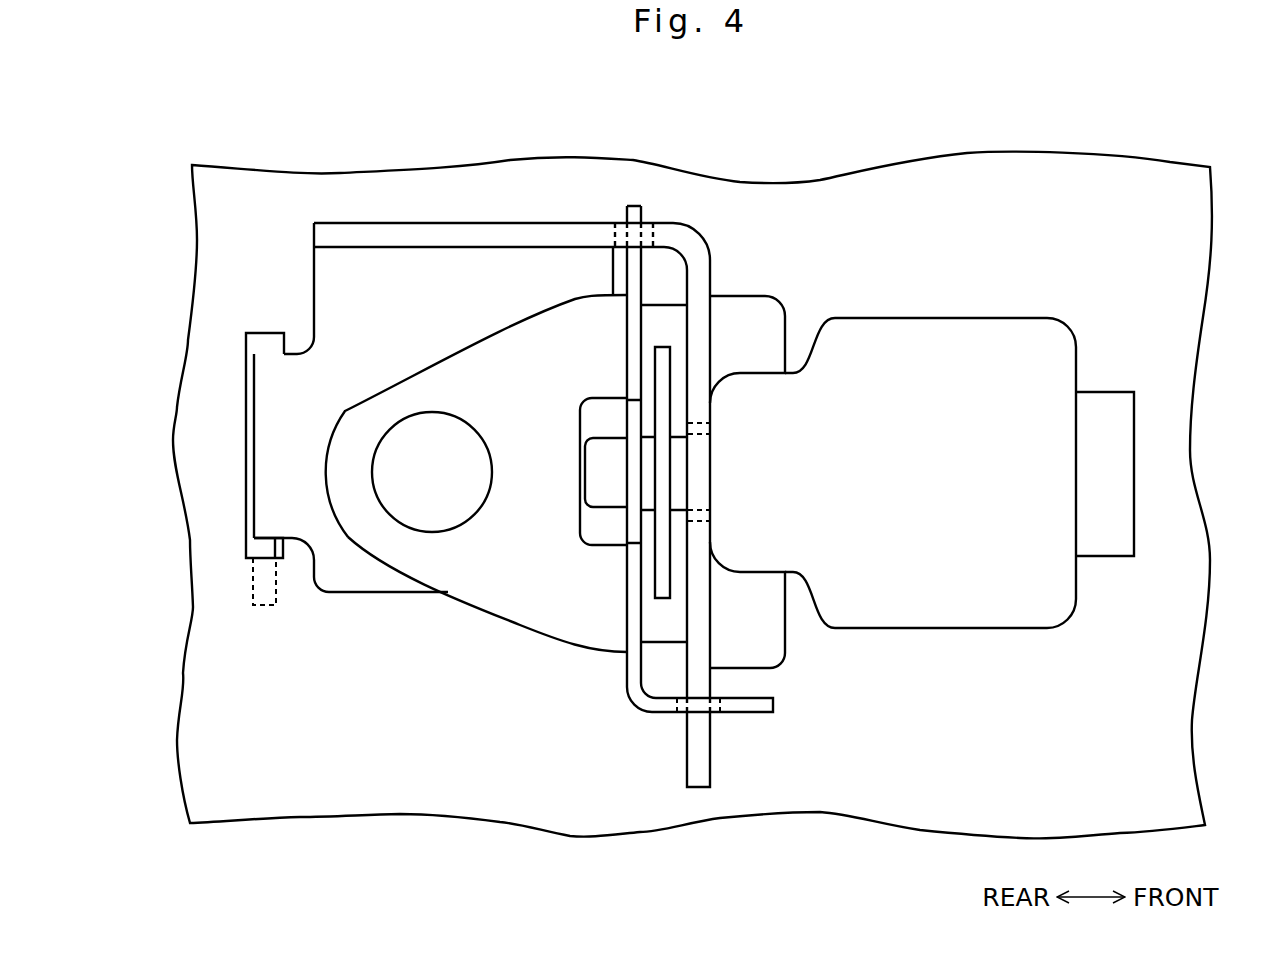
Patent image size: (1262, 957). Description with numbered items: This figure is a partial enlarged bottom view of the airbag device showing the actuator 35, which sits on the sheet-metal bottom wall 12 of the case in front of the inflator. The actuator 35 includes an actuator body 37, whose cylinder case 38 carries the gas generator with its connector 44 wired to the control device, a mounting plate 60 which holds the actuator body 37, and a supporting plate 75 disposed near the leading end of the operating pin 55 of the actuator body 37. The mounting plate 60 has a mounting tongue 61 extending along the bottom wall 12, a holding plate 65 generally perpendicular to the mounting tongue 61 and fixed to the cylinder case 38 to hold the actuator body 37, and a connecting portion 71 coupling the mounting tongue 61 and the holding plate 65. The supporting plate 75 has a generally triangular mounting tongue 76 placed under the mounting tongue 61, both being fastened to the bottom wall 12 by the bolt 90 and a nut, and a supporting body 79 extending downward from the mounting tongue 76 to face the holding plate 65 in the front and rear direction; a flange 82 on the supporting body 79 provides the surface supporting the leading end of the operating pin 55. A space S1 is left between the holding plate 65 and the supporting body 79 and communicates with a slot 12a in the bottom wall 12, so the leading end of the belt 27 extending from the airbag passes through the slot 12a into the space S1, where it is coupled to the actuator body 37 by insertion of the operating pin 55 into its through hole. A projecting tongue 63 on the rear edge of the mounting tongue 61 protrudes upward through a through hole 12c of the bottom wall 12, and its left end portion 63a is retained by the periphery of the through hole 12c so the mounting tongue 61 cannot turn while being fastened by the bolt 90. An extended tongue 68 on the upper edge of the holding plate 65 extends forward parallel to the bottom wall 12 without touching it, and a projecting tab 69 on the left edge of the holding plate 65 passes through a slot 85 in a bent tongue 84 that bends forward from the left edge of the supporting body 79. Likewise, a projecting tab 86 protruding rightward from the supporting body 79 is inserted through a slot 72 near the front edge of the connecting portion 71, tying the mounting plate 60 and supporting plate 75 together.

The bottom wall 12 is at (923, 800).
The slot 12a is at (662, 627).
The through hole 12c is at (267, 333).
The belt 27 is at (662, 373).
The actuator 35 is at (1080, 198).
The actuator body 37 is at (978, 655).
The cylinder case 38 is at (942, 333).
The connector 44 is at (1102, 397).
The operating pin 55 is at (598, 487).
The mounting plate 60 is at (541, 441).
The mounting tongue 61 is at (360, 578).
The projecting tongue 63 is at (262, 545).
The left end portion 63a is at (265, 603).
The holding plate 65 is at (702, 642).
The extended tongue 68 is at (770, 325).
The projecting tab 69 is at (700, 760).
The connecting portion 71 is at (500, 238).
The slot 72 is at (615, 222).
The supporting plate 75 is at (648, 738).
The mounting tongue 76 is at (505, 603).
The supporting body 79 is at (623, 337).
The flange 82 is at (603, 538).
The bent tongue 84 is at (755, 707).
The slot 85 is at (680, 712).
The projecting tab 86 is at (636, 205).
The bolt 90 is at (427, 433).
The space S1 is at (669, 278).